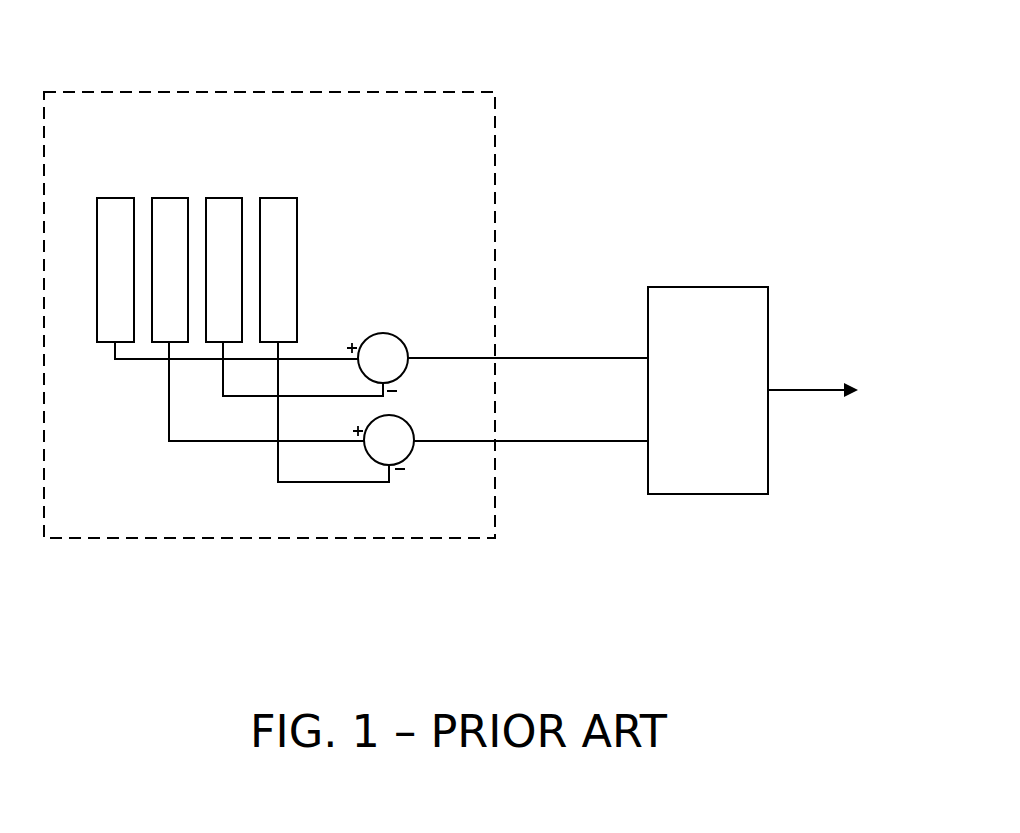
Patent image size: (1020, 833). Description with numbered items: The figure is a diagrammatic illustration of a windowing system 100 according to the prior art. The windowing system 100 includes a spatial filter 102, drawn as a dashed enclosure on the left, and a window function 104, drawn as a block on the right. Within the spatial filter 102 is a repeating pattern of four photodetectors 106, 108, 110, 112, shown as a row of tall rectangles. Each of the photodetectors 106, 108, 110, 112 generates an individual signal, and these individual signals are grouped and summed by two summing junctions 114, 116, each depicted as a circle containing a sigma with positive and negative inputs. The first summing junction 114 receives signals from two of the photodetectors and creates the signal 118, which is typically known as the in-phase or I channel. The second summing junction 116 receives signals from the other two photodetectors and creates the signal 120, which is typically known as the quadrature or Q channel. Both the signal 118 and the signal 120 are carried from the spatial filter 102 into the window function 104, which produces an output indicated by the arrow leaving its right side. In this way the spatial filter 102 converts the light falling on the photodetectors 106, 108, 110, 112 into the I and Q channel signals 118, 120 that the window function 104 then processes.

The windowing system 100 is at (622, 145).
The spatial filter 102 is at (218, 540).
The window function 104 is at (683, 407).
The photodetector 106 is at (118, 198).
The photodetector 108 is at (173, 198).
The photodetector 110 is at (222, 198).
The photodetector 112 is at (285, 198).
The summer 114 is at (388, 333).
The summer 116 is at (407, 458).
The in-phase (I) channel signal 118 is at (572, 358).
The quadrature (Q) channel signal 120 is at (572, 442).